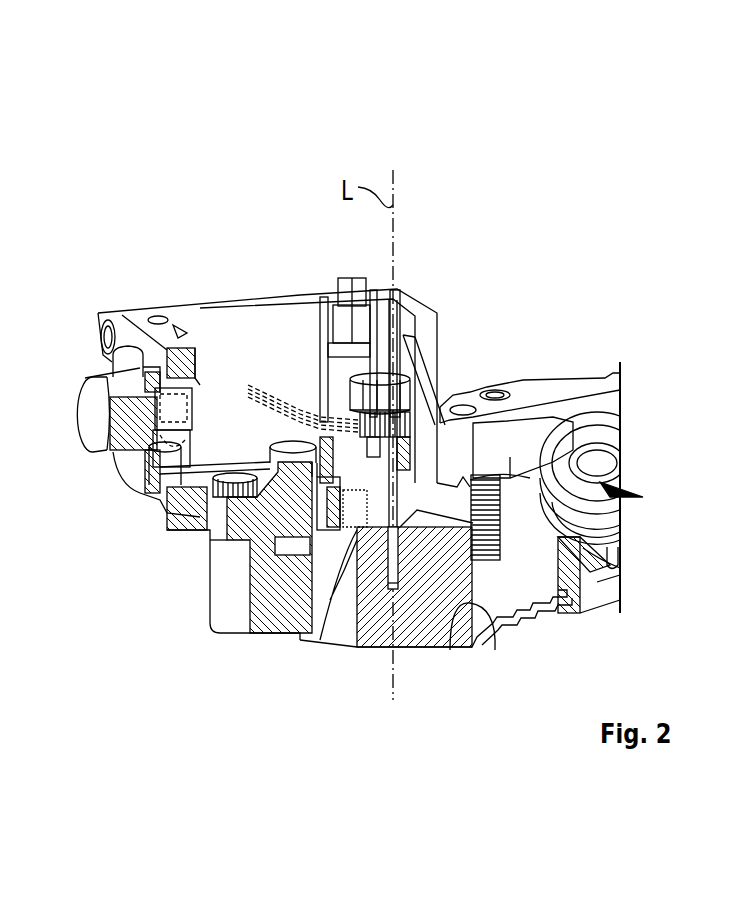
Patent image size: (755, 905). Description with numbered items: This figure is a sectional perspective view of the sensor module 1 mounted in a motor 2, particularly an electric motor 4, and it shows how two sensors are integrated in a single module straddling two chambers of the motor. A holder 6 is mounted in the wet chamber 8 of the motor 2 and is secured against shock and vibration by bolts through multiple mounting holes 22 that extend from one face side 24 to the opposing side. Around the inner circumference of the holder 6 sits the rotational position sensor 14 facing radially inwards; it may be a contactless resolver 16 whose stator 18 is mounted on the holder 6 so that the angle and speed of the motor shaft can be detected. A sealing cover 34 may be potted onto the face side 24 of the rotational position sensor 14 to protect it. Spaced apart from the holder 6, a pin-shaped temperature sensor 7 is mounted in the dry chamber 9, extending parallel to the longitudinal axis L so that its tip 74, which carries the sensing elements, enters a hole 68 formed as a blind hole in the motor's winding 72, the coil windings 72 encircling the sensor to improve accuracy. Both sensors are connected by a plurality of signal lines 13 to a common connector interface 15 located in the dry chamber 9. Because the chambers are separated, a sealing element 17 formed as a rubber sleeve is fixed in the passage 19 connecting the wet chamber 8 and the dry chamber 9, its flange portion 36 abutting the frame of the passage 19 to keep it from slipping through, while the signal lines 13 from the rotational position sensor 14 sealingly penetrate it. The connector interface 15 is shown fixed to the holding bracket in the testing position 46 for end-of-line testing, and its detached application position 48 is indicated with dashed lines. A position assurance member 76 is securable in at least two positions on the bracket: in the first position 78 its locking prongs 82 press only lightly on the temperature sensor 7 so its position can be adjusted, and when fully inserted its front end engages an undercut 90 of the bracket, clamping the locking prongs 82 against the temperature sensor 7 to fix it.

The sensor module 1 is at (582, 238).
The motor 2 is at (617, 265).
The electric motor 4 is at (642, 298).
The holder 6 is at (613, 540).
The temperature sensor 7 is at (385, 560).
The wet chamber 8 is at (585, 405).
The dry chamber 9 is at (208, 452).
The signal lines 13 is at (248, 383).
The rotational position sensor 14 is at (605, 460).
The connector interface 15 is at (107, 420).
The resolver 16 is at (597, 463).
The sealing element 17 is at (482, 515).
The stator 18 is at (573, 478).
The passage 19 is at (473, 502).
The mounting holes 22 is at (535, 485).
The face side 24 is at (537, 485).
The sealing cover 34 is at (520, 450).
The flange portion 36 is at (480, 470).
The testing position 46 is at (353, 317).
The application position 48 is at (140, 457).
The hole 68 is at (395, 570).
The winding 72 is at (462, 608).
The tip 74 is at (398, 562).
The position assurance member 76 is at (358, 388).
The first position 78 is at (400, 390).
The locking prong 82 is at (397, 452).
The undercut 90 is at (365, 428).